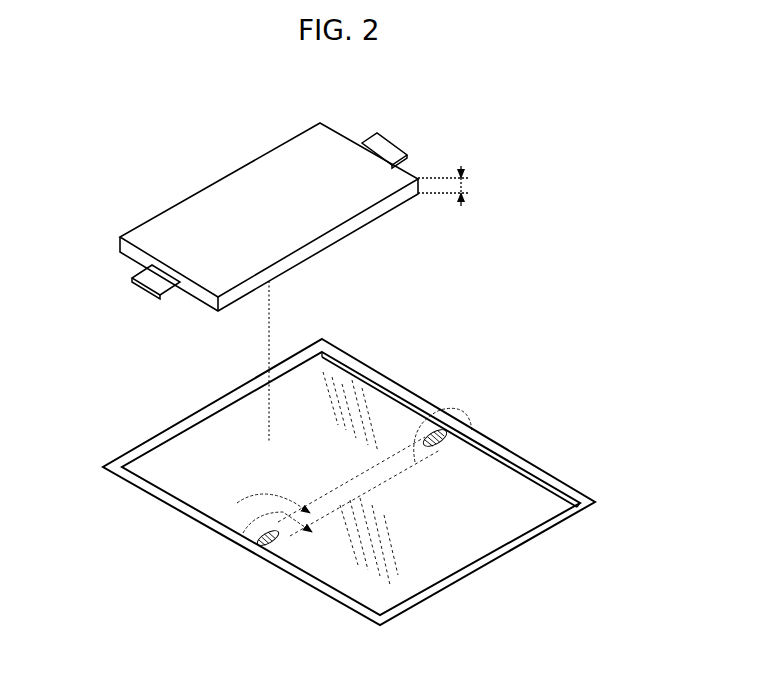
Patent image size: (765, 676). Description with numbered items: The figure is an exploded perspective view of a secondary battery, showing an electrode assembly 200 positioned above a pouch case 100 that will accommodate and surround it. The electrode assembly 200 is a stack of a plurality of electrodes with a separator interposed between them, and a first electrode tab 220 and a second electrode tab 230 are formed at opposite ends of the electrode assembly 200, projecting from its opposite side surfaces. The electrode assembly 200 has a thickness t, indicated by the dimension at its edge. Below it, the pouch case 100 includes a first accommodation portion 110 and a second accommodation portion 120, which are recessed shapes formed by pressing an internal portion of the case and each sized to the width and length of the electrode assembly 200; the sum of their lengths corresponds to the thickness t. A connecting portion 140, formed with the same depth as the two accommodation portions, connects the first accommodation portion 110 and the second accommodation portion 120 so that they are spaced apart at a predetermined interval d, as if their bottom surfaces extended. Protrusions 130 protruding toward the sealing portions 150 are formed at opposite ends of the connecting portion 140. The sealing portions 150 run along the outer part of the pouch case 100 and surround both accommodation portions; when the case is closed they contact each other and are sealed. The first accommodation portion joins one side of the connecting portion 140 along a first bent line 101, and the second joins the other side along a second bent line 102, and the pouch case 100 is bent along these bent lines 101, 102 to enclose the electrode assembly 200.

The pouch case 100 is at (406, 318).
The first bent line 101 is at (203, 529).
The second bent line 102 is at (277, 560).
The first accommodation portion 110 is at (384, 375).
The second accommodation portion 120 is at (503, 491).
The protrusion 130 is at (458, 414).
The connecting portion 140 is at (447, 430).
The sealing portion 150 is at (153, 495).
The electrode assembly 200 is at (191, 142).
The first electrode tab 220 is at (132, 285).
The second electrode tab 230 is at (390, 143).
The thickness t is at (468, 186).
The predetermined interval d is at (277, 522).